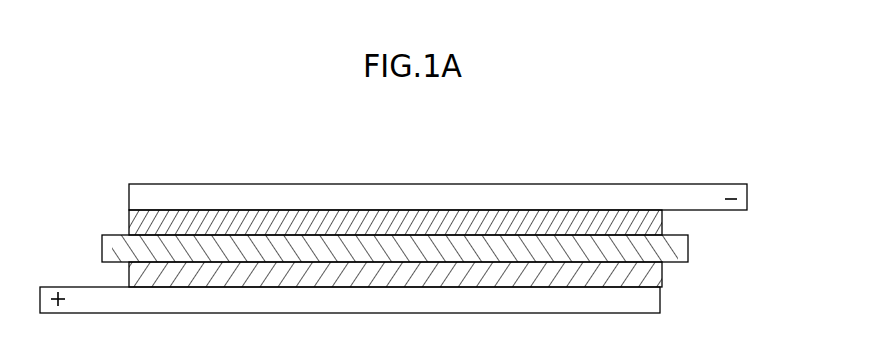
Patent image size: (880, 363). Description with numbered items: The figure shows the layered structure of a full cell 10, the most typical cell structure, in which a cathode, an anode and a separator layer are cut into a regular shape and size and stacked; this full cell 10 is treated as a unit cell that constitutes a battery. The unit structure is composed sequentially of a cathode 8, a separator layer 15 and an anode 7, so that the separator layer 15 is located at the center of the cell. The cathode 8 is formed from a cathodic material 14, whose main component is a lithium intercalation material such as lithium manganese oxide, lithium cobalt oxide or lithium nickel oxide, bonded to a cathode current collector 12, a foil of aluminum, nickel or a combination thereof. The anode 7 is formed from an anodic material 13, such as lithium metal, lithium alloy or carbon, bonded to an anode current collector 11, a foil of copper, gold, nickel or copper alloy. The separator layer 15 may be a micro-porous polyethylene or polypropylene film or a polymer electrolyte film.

The full cell 10 is at (421, 214).
The anode 7 is at (404, 175).
The anode current collector 11 is at (160, 195).
The anodic material 13 is at (136, 219).
The separator layer 15 is at (688, 262).
The cathode 8 is at (339, 256).
The cathodic material 14 is at (143, 270).
The cathode current collector 12 is at (43, 287).